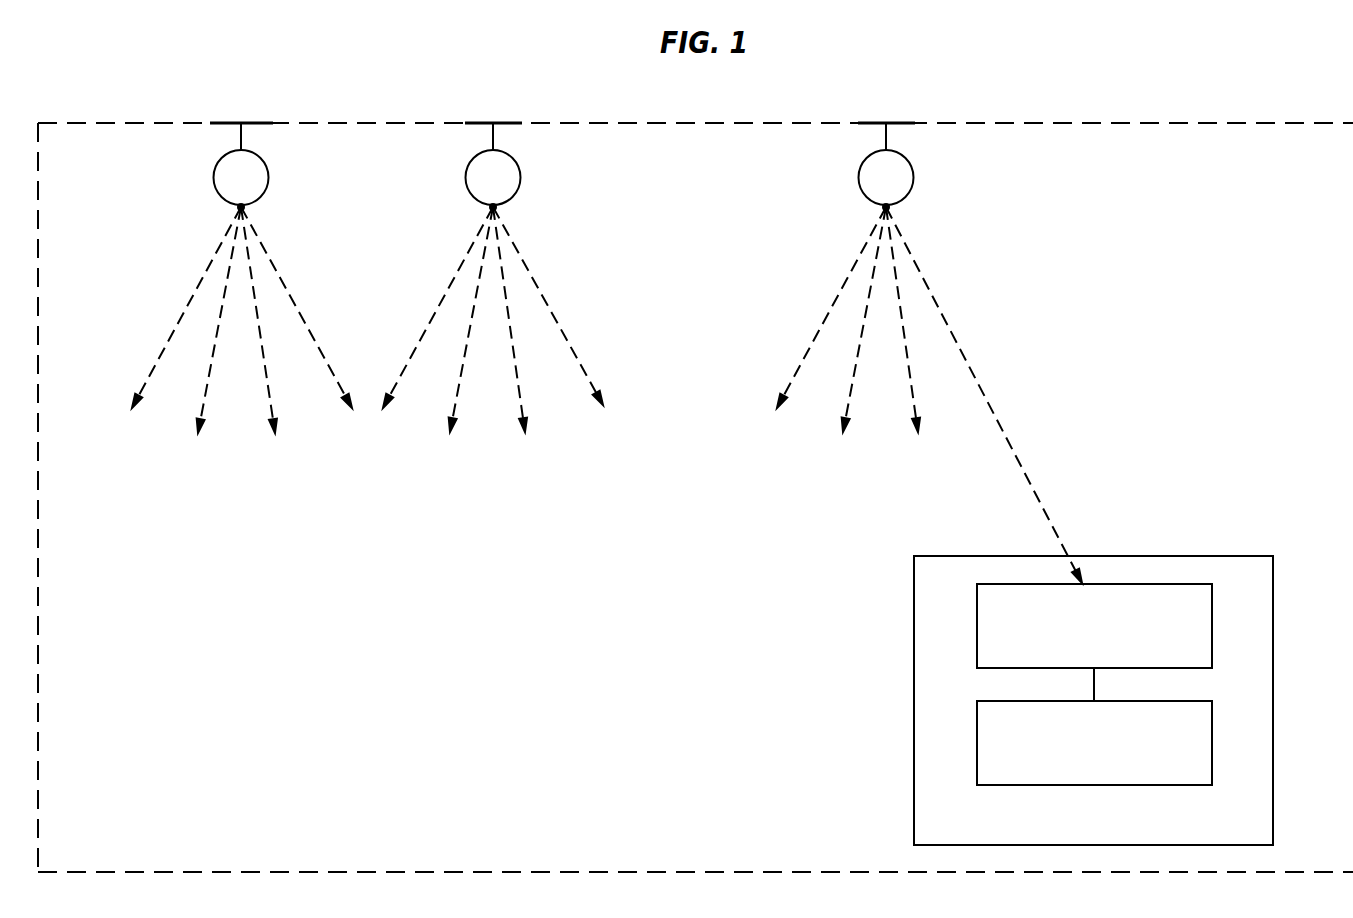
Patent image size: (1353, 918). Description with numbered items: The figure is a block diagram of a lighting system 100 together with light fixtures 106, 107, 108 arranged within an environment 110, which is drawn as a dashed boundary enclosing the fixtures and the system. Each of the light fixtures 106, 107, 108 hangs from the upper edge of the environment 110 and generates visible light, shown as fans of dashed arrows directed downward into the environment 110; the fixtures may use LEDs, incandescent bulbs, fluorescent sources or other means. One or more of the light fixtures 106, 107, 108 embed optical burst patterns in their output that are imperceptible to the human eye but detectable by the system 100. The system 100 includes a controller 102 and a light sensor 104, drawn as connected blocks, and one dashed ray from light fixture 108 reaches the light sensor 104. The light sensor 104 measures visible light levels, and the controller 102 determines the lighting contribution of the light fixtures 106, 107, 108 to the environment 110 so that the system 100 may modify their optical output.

The lighting system 100 is at (1153, 834).
The controller 102 is at (1076, 774).
The light sensor 104 is at (1076, 657).
The light fixture 106 is at (214, 172).
The light fixture 107 is at (466, 175).
The light fixture 108 is at (859, 175).
The environment 110 is at (123, 123).